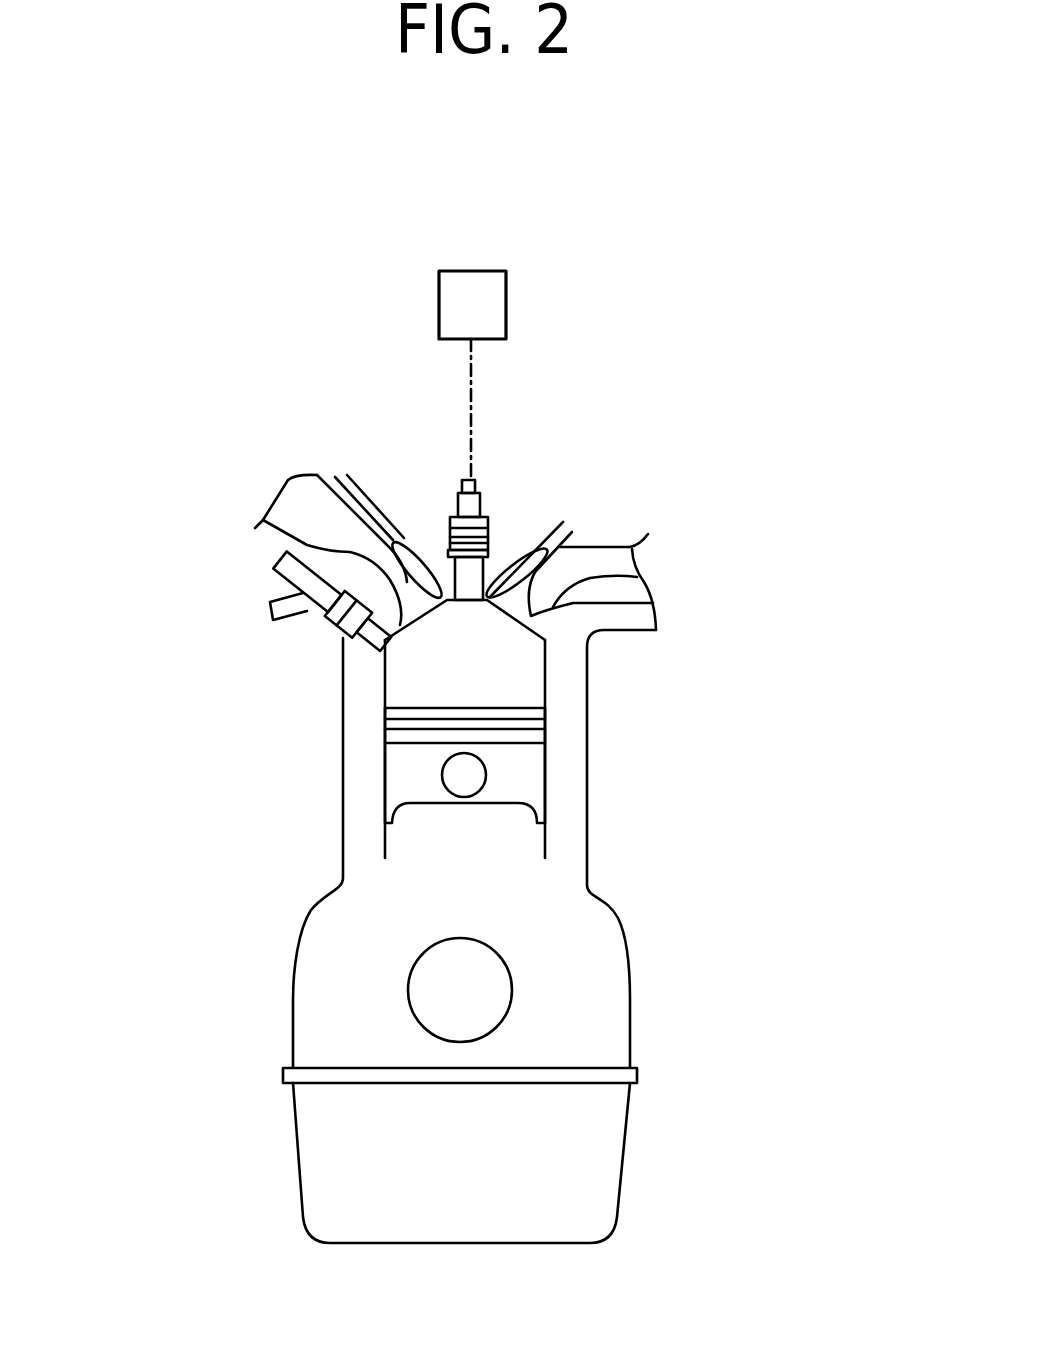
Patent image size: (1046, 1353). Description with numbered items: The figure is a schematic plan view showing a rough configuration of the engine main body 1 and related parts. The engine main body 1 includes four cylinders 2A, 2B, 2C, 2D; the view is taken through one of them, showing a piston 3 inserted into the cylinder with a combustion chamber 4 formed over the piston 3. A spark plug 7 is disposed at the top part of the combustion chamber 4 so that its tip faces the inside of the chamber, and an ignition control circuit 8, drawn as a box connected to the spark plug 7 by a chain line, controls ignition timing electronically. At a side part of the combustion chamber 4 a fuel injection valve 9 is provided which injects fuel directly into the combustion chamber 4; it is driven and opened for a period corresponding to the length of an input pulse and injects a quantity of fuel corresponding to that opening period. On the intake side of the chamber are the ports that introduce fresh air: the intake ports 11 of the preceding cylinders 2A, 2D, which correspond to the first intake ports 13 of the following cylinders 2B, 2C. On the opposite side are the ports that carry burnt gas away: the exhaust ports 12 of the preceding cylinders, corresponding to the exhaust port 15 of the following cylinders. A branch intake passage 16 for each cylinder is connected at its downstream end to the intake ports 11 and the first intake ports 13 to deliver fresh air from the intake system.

The engine main body 1 is at (306, 806).
The first cylinder 2A is at (656, 747).
The second cylinder 2B is at (656, 747).
The third cylinder 2C is at (656, 747).
The fourth cylinder 2D is at (550, 664).
The piston 3 is at (527, 772).
The combustion chamber 4 is at (520, 690).
The spark plug 7 is at (456, 503).
The ignition control circuit 8 is at (477, 271).
The fuel injection valve 9 is at (334, 640).
The intake port 11 is at (252, 550).
The first intake port 13 is at (303, 545).
The exhaust port 12 is at (691, 576).
The exhaust port 15 is at (691, 576).
The branch intake passage 16 is at (655, 577).